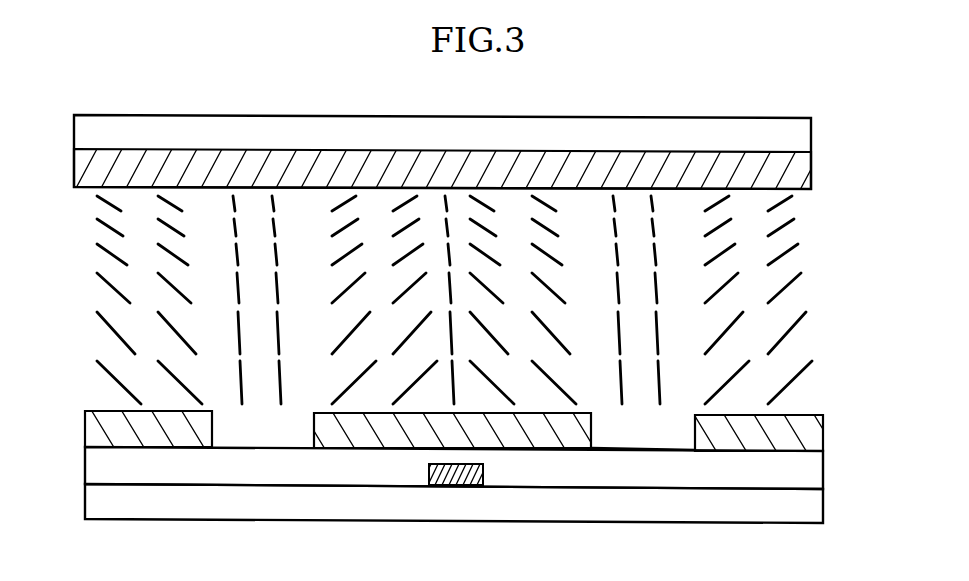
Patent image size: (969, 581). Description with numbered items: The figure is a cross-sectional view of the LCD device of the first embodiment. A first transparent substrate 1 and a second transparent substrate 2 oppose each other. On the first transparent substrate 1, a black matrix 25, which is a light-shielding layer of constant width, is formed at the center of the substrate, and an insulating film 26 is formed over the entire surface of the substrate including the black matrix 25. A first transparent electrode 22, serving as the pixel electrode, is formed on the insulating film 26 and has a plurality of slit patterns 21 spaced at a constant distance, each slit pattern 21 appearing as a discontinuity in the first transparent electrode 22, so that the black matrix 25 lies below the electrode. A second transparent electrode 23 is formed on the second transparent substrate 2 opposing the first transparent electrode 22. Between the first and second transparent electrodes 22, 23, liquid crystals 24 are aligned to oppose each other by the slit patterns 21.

The first transparent substrate 1 is at (87, 505).
The second transparent substrate 2 is at (78, 137).
The slit patterns 21 is at (642, 432).
The first transparent electrode 22 is at (810, 434).
The second transparent electrode 23 is at (800, 178).
The liquid crystals 24 is at (788, 327).
The black matrix 25 is at (456, 487).
The insulating film 26 is at (812, 470).